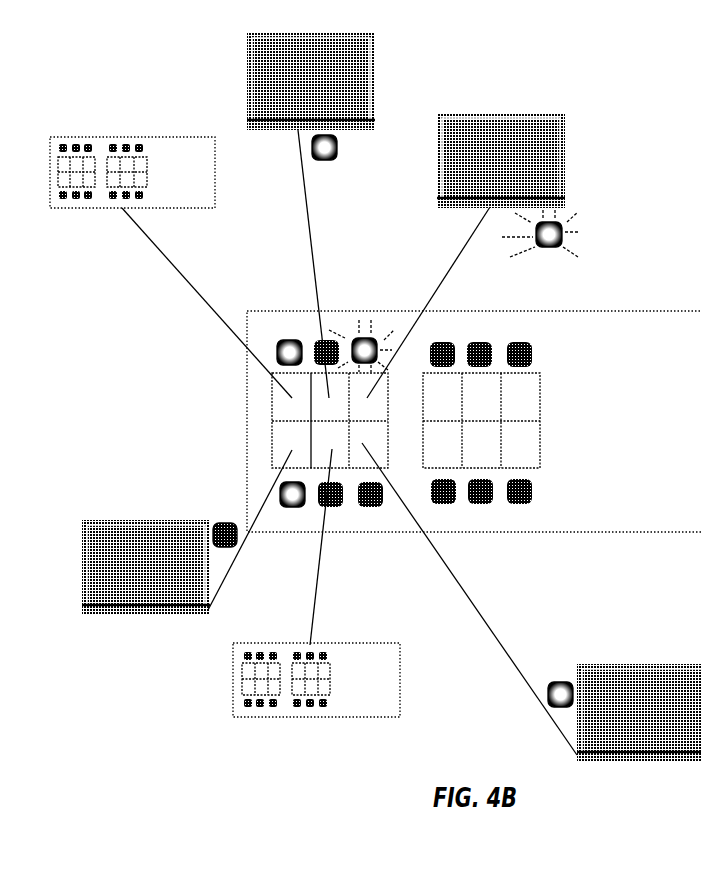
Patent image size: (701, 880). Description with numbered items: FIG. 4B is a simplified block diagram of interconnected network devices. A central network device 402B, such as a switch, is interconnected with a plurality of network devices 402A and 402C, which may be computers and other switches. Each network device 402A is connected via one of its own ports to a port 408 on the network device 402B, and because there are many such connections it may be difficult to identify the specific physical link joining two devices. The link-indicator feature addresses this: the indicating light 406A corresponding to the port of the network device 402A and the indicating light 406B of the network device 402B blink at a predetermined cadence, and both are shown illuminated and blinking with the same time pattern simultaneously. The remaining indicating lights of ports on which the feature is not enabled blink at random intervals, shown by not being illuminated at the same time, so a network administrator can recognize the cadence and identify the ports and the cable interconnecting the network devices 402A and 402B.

The network device 402A is at (513, 133).
The network device 402B is at (436, 378).
The network device 402C is at (184, 160).
The indicating light 406A is at (541, 241).
The indicating light 406B is at (361, 332).
The port 408 is at (287, 413).